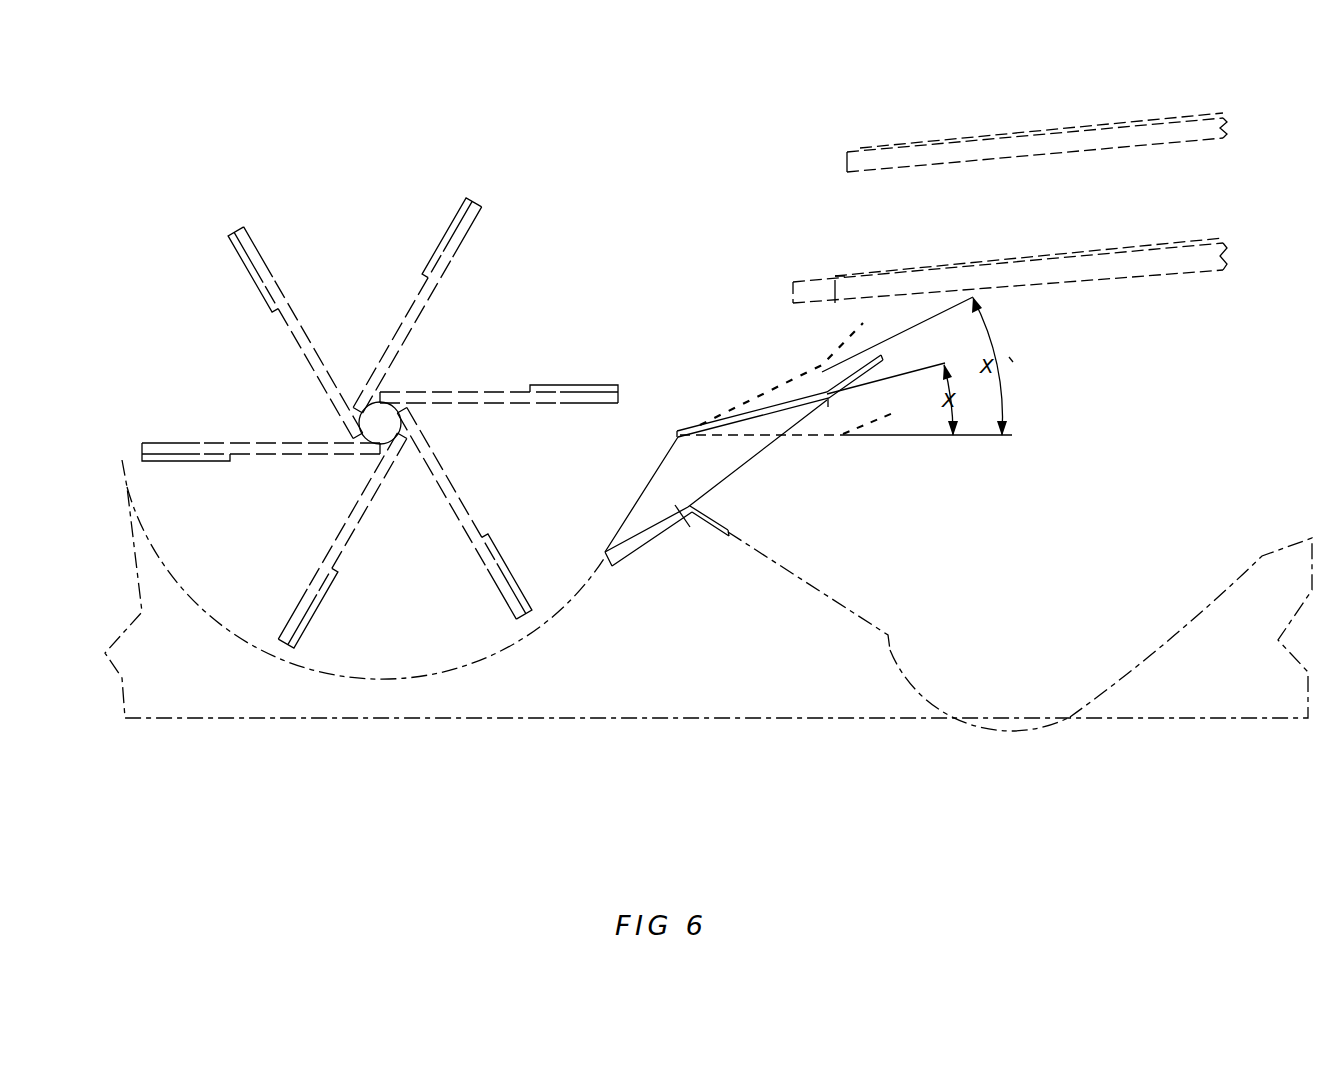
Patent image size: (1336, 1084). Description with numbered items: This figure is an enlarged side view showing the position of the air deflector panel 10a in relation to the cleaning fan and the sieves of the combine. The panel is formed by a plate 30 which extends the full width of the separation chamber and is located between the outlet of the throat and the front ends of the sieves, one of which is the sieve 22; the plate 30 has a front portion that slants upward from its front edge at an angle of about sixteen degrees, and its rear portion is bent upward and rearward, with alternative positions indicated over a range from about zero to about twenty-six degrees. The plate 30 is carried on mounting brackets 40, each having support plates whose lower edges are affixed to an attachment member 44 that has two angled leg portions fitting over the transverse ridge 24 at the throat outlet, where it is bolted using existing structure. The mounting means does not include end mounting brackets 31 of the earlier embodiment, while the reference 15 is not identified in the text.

The sieve 22 is at (386, 290).
The housing 15 is at (865, 618).
The plate 30 is at (751, 415).
The air deflector panel 10a is at (758, 372).
The end mounting bracket 31 is at (655, 482).
The mounting bracket 40 is at (640, 525).
The attachment member 44 is at (718, 518).
The ridge 24 is at (690, 512).